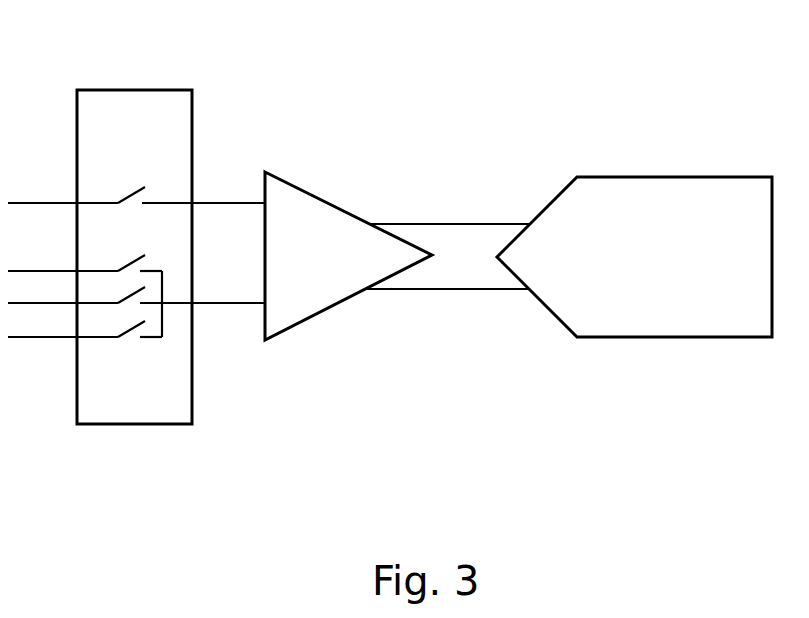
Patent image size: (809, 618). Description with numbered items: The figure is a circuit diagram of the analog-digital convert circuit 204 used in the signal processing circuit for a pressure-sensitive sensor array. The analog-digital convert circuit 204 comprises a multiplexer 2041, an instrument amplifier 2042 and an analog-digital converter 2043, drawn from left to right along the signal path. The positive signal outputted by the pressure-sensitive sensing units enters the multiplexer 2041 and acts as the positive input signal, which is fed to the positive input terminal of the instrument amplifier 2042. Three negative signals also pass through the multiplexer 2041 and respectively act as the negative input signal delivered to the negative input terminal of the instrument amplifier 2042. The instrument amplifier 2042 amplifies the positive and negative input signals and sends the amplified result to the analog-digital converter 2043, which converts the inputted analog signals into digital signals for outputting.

The analog-digital convert circuit 204 is at (54, 68).
The multiplexer 2041 is at (148, 90).
The instrument amplifier 2042 is at (308, 192).
The analog-digital converter 2043 is at (637, 177).